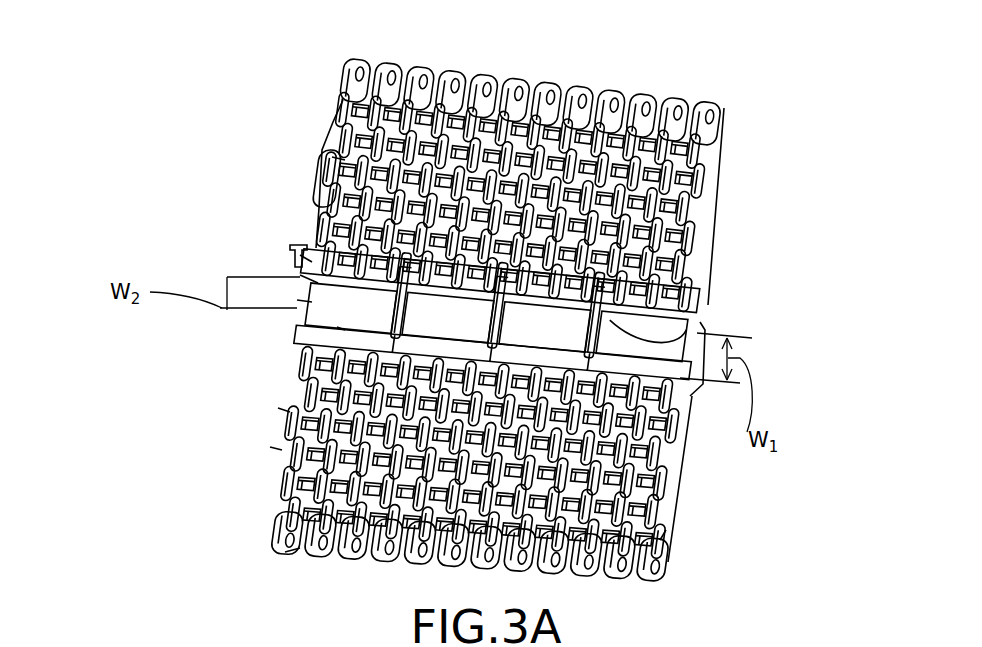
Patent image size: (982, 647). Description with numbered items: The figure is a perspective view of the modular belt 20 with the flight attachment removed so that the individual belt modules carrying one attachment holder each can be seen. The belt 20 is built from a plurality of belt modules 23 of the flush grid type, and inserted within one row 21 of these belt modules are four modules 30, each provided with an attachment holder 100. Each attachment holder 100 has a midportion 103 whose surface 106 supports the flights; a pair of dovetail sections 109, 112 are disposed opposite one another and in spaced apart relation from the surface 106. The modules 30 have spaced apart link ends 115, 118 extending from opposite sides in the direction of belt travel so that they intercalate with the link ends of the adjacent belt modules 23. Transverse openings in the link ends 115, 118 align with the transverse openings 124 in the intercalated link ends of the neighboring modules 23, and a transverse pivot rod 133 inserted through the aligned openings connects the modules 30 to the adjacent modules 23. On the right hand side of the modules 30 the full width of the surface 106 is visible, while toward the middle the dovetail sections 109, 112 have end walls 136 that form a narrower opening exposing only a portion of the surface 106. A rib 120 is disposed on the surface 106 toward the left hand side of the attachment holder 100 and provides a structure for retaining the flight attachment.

The modular belt 20 is at (478, 305).
The row of belt modules 21 is at (759, 113).
The belt modules 23 is at (332, 157).
The modules with attachment holders 30 is at (548, 309).
The attachment holder 100 is at (658, 152).
The midportion 103 is at (270, 447).
The surface 106 is at (380, 320).
The dovetail section 109 is at (300, 280).
The dovetail section 112 is at (387, 313).
The link end 115 is at (302, 262).
The link end 118 is at (280, 412).
The rib 120 is at (297, 300).
The transverse openings 124 is at (288, 552).
The transverse pivot rod 133 is at (290, 250).
The end walls 136 is at (697, 340).